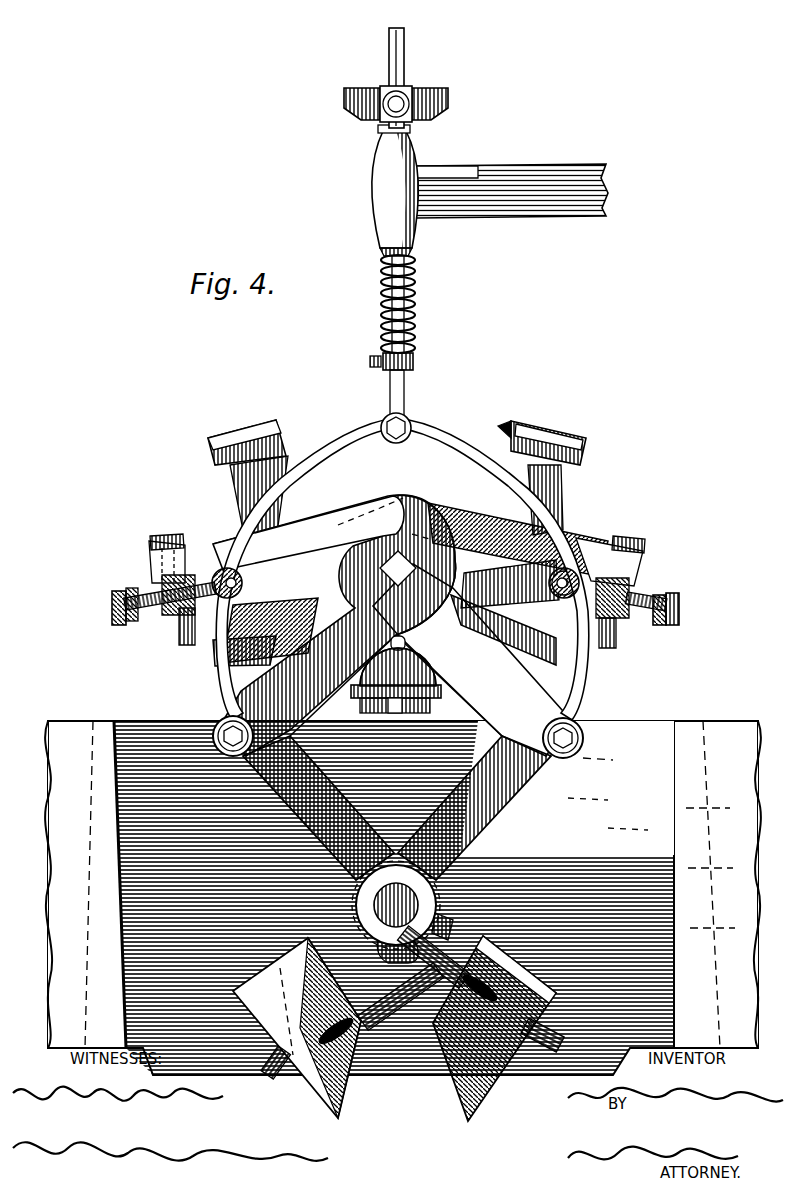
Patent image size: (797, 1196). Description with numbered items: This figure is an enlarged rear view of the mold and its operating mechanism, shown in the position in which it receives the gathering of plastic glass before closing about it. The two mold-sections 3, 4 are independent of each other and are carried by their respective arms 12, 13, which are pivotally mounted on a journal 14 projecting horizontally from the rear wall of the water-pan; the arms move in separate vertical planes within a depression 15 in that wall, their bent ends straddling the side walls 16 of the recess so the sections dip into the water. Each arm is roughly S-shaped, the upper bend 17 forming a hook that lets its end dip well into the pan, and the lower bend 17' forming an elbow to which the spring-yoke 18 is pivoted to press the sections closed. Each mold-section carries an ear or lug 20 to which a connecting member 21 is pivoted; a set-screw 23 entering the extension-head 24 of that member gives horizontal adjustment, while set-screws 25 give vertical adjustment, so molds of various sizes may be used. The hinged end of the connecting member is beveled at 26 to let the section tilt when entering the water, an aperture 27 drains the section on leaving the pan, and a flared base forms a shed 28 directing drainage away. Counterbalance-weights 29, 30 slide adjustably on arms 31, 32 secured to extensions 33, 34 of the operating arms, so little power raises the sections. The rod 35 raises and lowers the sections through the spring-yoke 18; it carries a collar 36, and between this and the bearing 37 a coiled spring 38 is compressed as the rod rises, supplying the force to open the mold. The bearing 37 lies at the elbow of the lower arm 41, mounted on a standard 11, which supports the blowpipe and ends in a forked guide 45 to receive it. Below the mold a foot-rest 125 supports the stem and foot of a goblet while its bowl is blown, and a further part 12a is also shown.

The mold-section 3 is at (248, 472).
The mold-section 4 is at (542, 469).
The standard 11 is at (412, 544).
The arm 12 is at (318, 808).
The arm 13 is at (474, 808).
The journal 14 is at (430, 896).
The depression 15 is at (394, 898).
The side walls 16 is at (92, 840).
The upper bend 17 is at (343, 695).
The lower bend 17' is at (451, 698).
The spring-yoke 18 is at (458, 430).
The ear or lug 20 is at (549, 588).
The connecting member 21 is at (215, 588).
The set-screw 23 is at (110, 615).
The extension-head 24 is at (132, 610).
The set-screws 25 is at (158, 529).
The bevel 26 is at (245, 558).
The aperture 27 is at (275, 598).
The shed 28 is at (520, 636).
The counterbalance-weight 29 is at (297, 1028).
The counterbalance-weight 30 is at (494, 1028).
The arm 31 is at (262, 1080).
The arm 32 is at (545, 1040).
The extension 33 is at (401, 997).
The extension 34 is at (395, 940).
The rod 35 is at (381, 388).
The collar 36 is at (406, 353).
The bearing 37 is at (366, 214).
The coiled spring 38 is at (410, 297).
The lower arm 41 is at (499, 200).
The forked guide 45 is at (444, 91).
The dome cap 12a is at (398, 667).
The foot-rest 125 is at (383, 692).